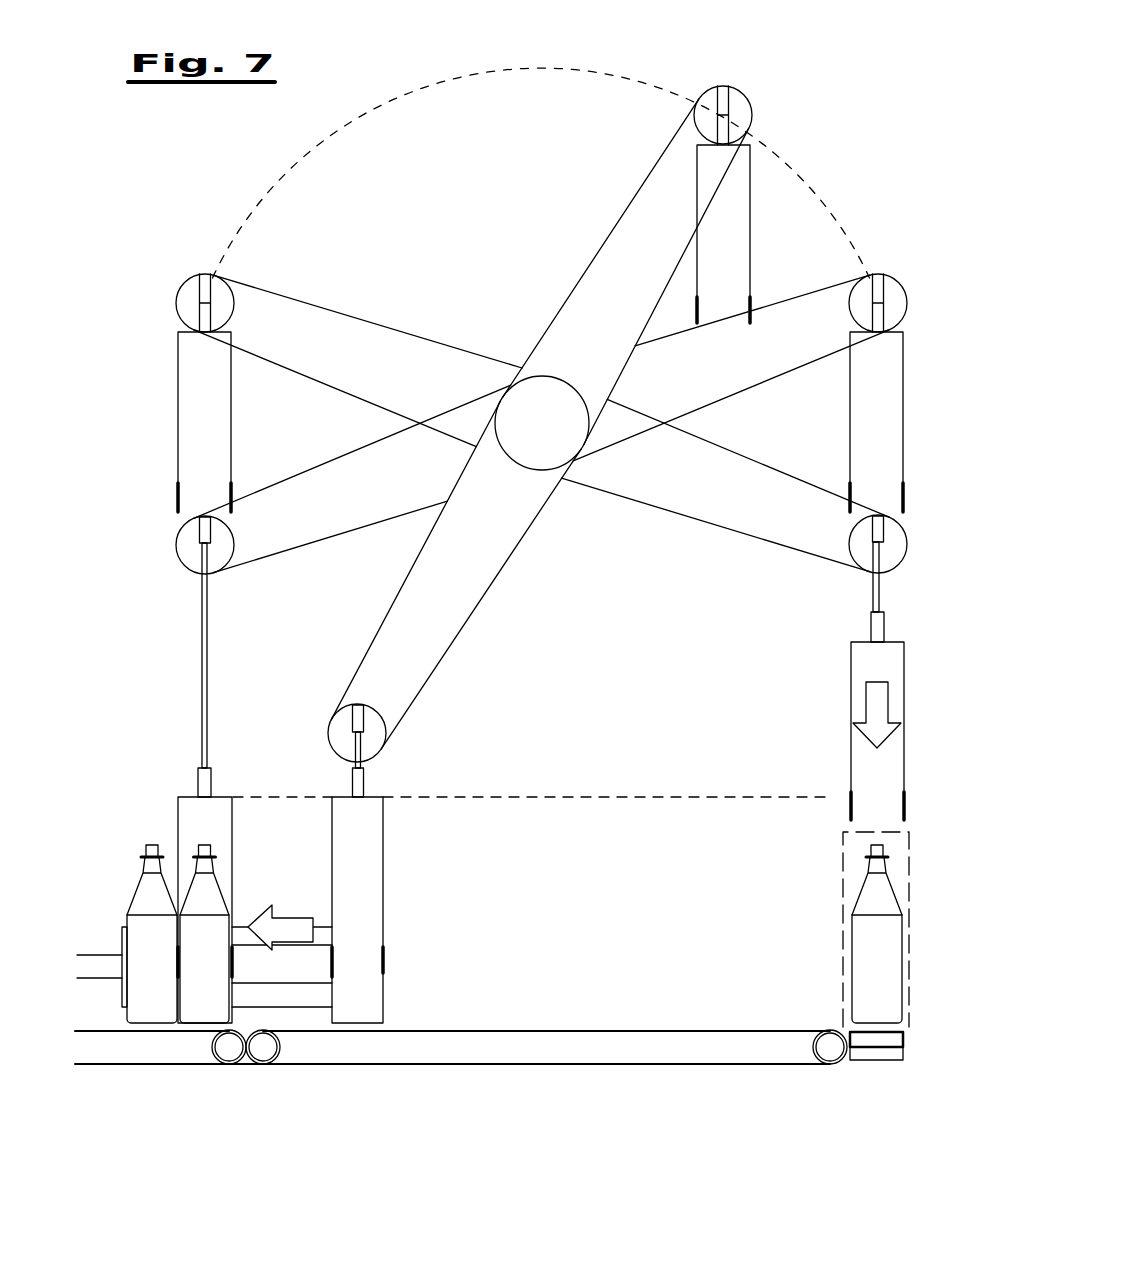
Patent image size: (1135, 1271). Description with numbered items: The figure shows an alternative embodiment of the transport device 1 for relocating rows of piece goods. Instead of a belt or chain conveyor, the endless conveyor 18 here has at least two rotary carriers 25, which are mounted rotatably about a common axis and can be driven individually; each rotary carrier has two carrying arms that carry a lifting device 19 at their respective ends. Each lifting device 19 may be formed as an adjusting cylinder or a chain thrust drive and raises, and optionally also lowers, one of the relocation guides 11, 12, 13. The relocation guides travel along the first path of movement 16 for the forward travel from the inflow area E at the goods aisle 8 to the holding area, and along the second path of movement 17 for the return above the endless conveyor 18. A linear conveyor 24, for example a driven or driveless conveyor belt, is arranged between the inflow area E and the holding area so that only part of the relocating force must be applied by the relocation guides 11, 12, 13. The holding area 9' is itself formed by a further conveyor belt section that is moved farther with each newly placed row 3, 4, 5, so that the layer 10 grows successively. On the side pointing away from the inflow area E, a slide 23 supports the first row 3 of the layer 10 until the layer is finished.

The transport device 1 is at (792, 161).
The first row 3 is at (152, 1000).
The second row 4 is at (203, 1003).
The row 5 is at (867, 998).
The goods aisle 8 is at (857, 1057).
The holding area 9' is at (192, 1096).
The layer 10 is at (193, 737).
The first relocation guide 11 is at (178, 833).
The second relocation guide 12 is at (383, 818).
The relocation guide 13 is at (851, 660).
The first path of movement 16 is at (618, 797).
The second path of movement 17 is at (445, 77).
The endless conveyor 18 is at (415, 350).
The lifting device 19 is at (870, 535).
The slide 23 is at (122, 935).
The linear conveyor 24 is at (605, 1030).
The rotary carrier 25 is at (572, 337).
The inflow area E is at (857, 928).